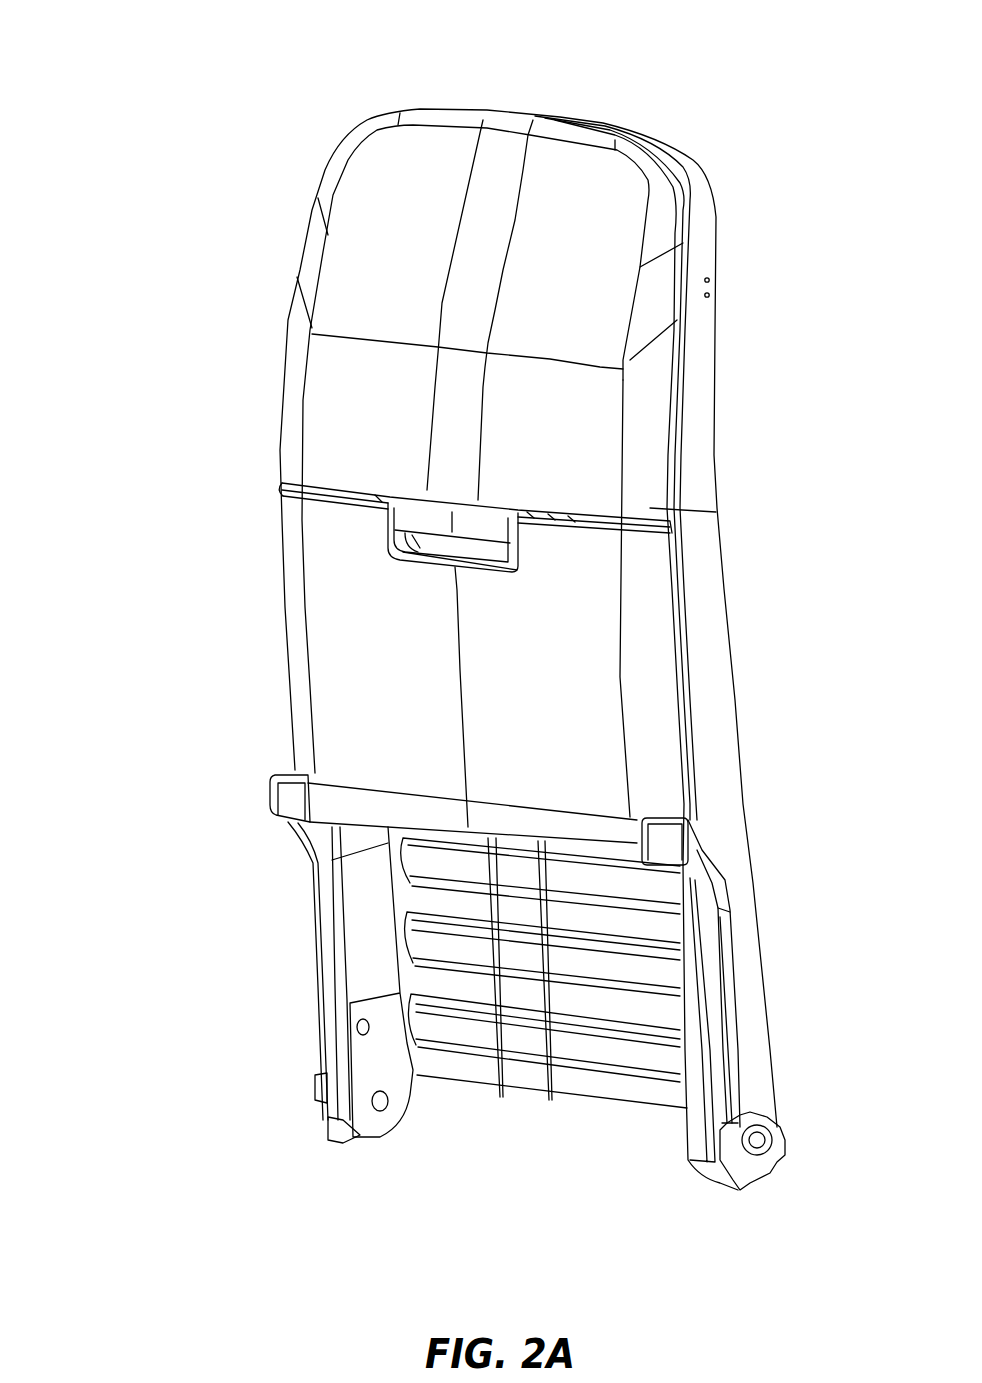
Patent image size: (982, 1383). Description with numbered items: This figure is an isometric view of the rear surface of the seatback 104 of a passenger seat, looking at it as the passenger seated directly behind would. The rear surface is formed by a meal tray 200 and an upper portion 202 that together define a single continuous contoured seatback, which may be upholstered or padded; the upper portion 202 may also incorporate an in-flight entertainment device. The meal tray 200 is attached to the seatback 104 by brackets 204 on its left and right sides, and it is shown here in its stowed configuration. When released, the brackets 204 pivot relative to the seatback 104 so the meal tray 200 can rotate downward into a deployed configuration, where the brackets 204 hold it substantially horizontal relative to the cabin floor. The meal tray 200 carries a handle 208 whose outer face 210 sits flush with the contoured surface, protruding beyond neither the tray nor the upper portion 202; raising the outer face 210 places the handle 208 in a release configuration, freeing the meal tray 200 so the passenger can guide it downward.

The seatback 104 is at (143, 65).
The meal tray 200 is at (580, 692).
The upper portion 202 is at (387, 278).
The brackets 204 is at (295, 810).
The handle 208 is at (425, 515).
The outer face 210 is at (473, 525).